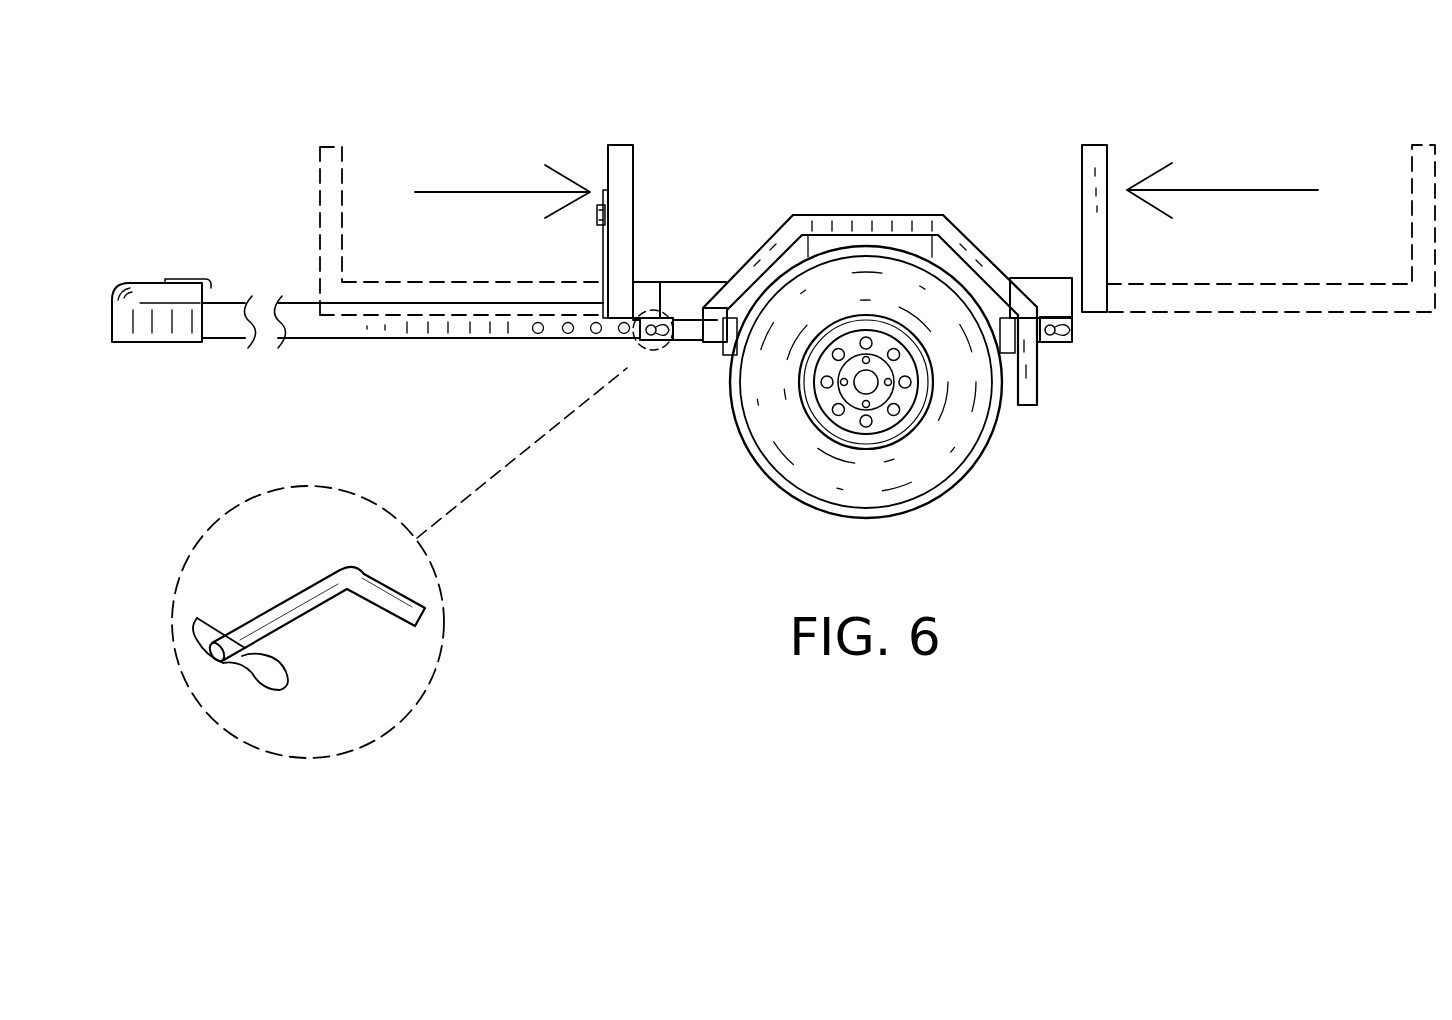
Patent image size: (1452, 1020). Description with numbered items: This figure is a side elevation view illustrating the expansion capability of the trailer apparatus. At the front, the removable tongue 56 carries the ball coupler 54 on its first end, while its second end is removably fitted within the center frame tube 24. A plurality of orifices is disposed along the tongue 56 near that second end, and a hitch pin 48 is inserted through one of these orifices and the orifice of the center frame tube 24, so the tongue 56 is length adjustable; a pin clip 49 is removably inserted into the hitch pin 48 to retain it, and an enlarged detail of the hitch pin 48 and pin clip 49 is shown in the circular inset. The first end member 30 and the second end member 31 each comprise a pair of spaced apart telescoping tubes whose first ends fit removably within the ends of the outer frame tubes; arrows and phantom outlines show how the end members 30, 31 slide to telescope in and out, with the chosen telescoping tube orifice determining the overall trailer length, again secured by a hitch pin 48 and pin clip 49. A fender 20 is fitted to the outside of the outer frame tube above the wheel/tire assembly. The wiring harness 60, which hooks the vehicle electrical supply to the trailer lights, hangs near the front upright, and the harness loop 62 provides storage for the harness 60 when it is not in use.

The fender 20 is at (848, 215).
The center frame tube 24 is at (688, 280).
The first end member 30 is at (305, 120).
The second end member 31 is at (1262, 348).
The hitch pin 48 is at (1057, 334).
The pin clip 49 is at (1071, 328).
The ball coupler 54 is at (170, 366).
The tongue 56 is at (408, 339).
The wiring harness 60 is at (603, 255).
The harness loop 62 is at (600, 193).